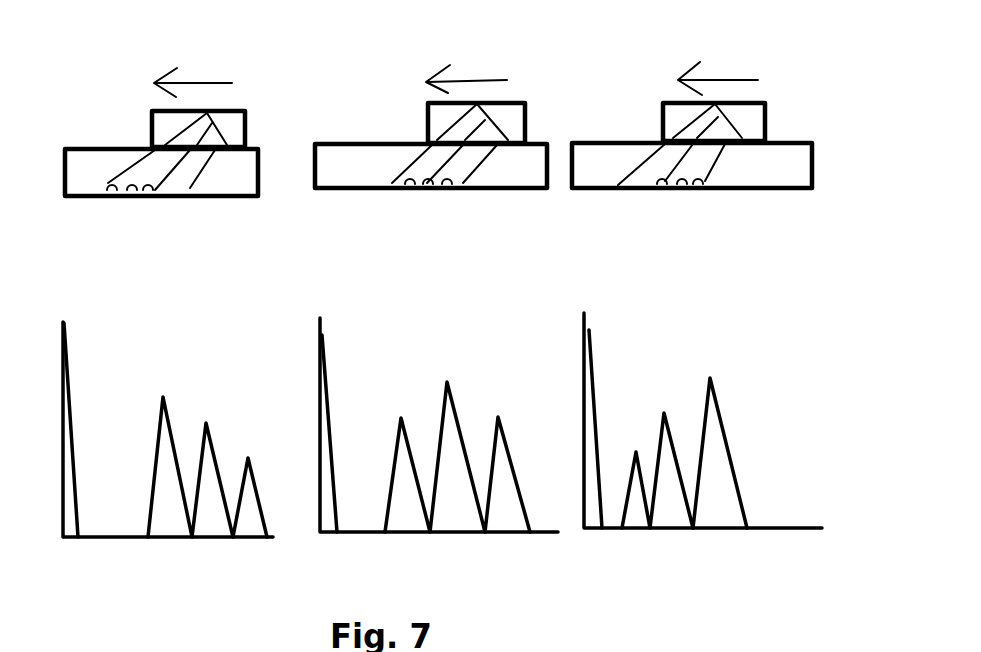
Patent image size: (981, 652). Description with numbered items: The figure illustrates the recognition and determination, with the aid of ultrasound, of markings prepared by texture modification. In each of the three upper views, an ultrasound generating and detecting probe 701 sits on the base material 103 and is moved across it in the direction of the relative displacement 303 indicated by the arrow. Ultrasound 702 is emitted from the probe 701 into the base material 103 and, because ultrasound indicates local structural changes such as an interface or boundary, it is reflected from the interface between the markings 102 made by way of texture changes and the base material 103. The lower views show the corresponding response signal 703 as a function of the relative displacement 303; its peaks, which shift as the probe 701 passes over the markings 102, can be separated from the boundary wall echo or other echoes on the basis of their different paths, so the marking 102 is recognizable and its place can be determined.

The ultrasound generating and detecting probe 701 is at (160, 125).
The ultrasound 702 is at (167, 168).
The response signal 703 is at (153, 427).
The relative displacement 303 is at (727, 73).
The base material 103 is at (797, 165).
The marking 102 is at (712, 188).